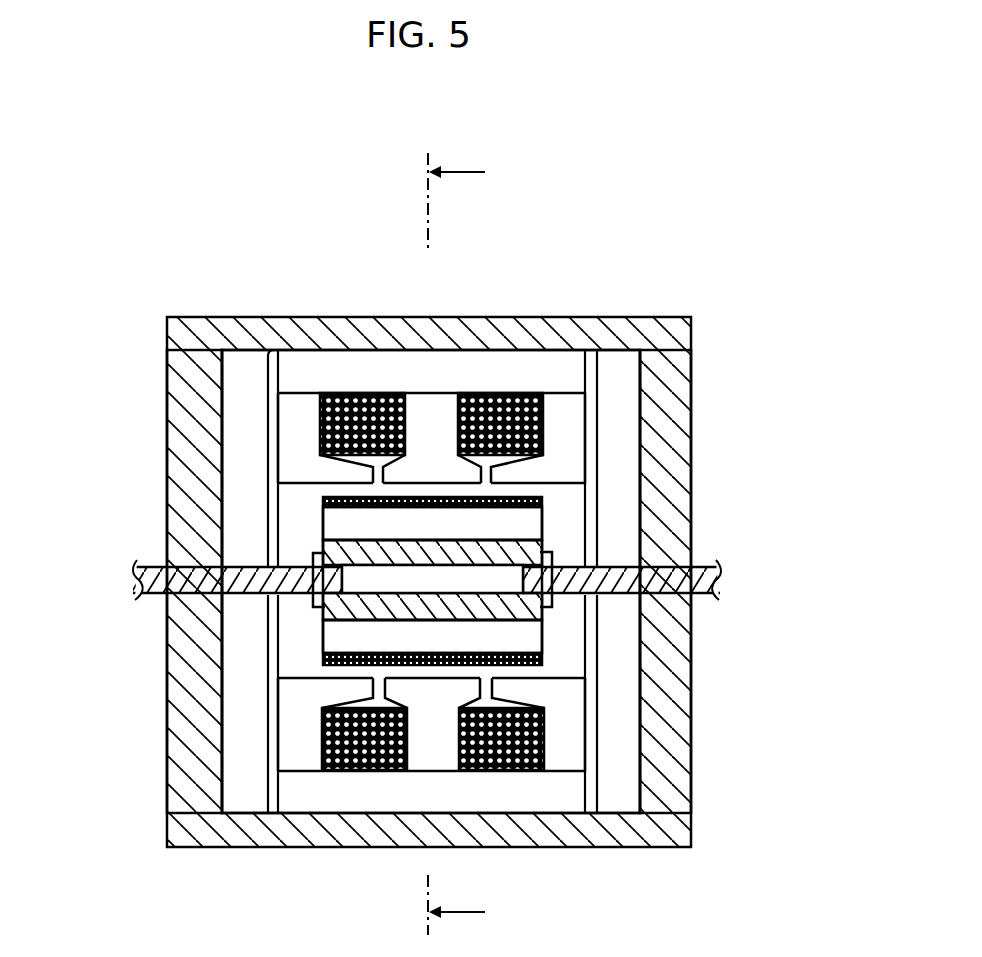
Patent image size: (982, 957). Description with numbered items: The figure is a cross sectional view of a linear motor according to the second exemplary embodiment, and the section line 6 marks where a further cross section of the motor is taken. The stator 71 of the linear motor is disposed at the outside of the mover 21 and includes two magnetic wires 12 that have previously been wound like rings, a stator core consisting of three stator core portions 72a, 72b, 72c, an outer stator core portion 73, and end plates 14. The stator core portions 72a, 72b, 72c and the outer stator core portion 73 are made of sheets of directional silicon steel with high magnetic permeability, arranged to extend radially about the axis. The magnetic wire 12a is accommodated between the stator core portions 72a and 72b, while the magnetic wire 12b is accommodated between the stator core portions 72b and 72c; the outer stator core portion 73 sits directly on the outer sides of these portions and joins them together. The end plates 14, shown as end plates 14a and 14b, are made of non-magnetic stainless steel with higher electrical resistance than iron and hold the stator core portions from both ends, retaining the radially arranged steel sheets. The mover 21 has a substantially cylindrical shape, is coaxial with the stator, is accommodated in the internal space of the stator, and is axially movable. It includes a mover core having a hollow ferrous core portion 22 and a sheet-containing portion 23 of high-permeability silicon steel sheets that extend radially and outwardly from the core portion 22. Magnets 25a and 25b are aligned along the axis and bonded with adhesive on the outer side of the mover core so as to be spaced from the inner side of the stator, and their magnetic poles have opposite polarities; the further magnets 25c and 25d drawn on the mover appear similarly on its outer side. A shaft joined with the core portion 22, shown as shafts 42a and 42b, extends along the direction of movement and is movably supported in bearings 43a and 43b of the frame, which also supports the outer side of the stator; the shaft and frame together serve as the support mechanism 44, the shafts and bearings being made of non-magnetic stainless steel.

The section line 6— 6 is at (456, 535).
The magnetic wire 12 is at (348, 392).
The magnetic wire 12a is at (362, 400).
The magnetic wire 12b is at (527, 397).
The end plate 14 is at (270, 422).
The end plate 14a is at (270, 377).
The end plate 14b is at (592, 425).
The mover 21 is at (357, 637).
The core portion 22 is at (530, 635).
The sheet-containing portion 23 is at (390, 640).
The magnet 25a is at (327, 498).
The magnet 25b is at (542, 500).
The magnet 25c is at (403, 672).
The magnet 25d is at (541, 668).
The shaft 42a is at (140, 580).
The shaft 42b is at (712, 578).
The bearing 43a is at (188, 618).
The bearing 43b is at (668, 620).
The support mechanism 44 is at (707, 603).
The stator 71 is at (322, 365).
The stator core portion 72a is at (298, 405).
The stator core portion 72b is at (433, 412).
The stator core portion 72c is at (558, 410).
The outer stator core portion 73 is at (425, 372).